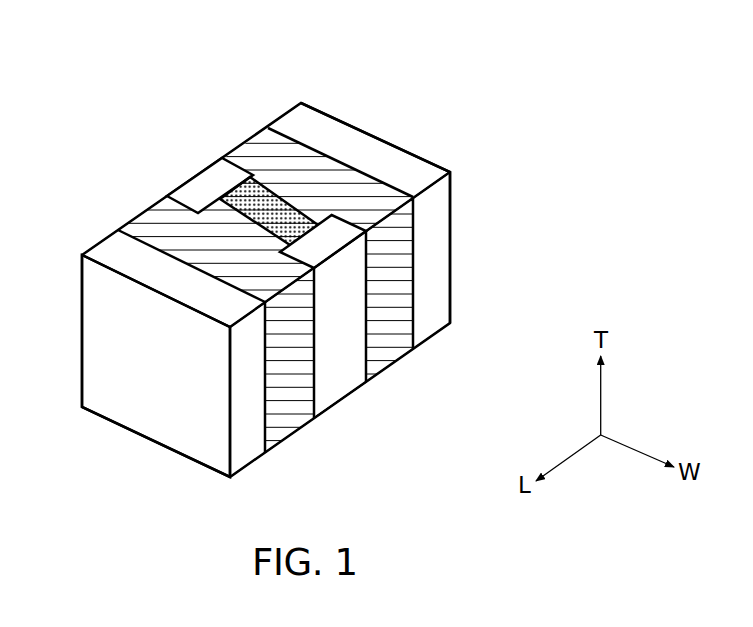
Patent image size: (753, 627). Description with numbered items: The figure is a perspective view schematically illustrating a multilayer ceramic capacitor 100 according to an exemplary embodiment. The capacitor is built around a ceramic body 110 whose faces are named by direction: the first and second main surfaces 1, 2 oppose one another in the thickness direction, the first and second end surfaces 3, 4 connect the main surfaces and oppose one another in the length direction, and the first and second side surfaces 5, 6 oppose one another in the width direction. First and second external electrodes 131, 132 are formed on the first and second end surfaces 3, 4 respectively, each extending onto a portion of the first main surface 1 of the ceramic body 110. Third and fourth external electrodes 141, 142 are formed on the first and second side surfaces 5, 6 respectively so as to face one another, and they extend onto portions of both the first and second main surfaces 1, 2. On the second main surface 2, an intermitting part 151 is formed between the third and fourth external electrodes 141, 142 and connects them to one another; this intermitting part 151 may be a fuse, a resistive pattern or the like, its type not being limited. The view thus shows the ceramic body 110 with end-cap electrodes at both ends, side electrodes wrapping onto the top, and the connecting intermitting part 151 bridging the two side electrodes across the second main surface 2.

The multilayer ceramic capacitor 100 is at (93, 37).
The ceramic body 110 is at (152, 225).
The first external electrode 131 is at (108, 252).
The second external electrode 132 is at (298, 122).
The third external electrode 141 is at (203, 187).
The fourth external electrode 142 is at (340, 383).
The intermitting part 151 is at (267, 197).
The first main surface 1 is at (326, 383).
The second main surface 2 is at (308, 176).
The first end surface 3 is at (147, 396).
The second end surface 4 is at (389, 168).
The first side surface 5 is at (106, 307).
The second side surface 6 is at (345, 323).